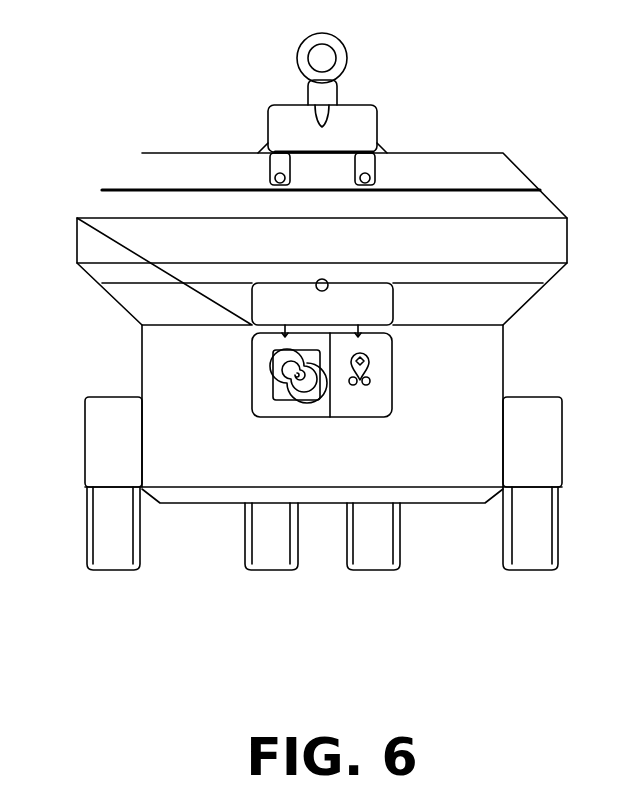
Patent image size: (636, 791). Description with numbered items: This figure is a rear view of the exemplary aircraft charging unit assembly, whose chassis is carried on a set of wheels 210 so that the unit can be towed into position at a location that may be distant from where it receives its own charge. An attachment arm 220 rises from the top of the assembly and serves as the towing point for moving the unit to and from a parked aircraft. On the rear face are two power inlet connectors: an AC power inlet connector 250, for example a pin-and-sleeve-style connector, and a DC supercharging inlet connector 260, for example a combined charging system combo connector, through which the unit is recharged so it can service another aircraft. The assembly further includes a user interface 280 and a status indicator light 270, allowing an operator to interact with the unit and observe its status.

The legs 210 is at (118, 560).
The hanging ring 220 is at (338, 97).
The speaker 250 is at (295, 380).
The indicator lock 260 is at (350, 380).
The housing 270 is at (508, 187).
The mounting block 280 is at (298, 167).